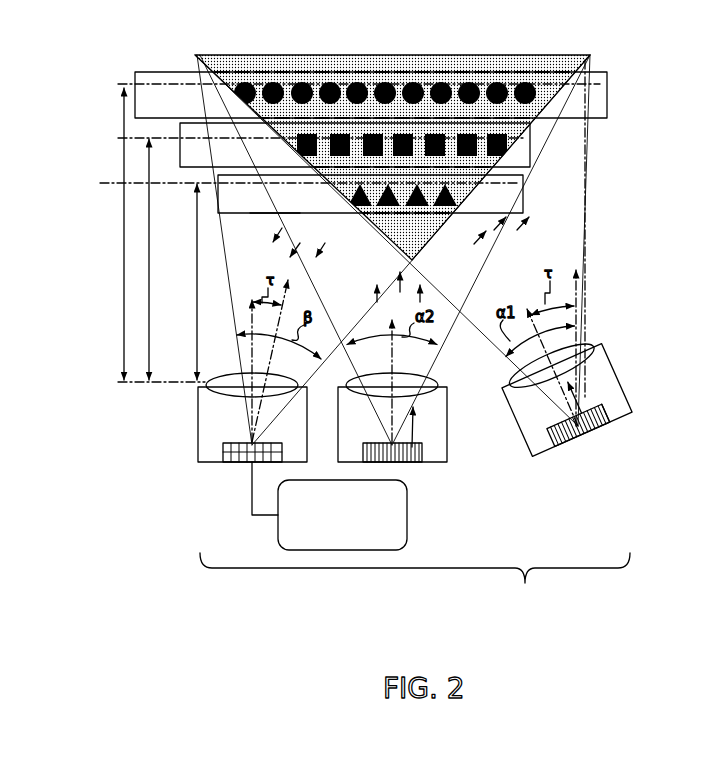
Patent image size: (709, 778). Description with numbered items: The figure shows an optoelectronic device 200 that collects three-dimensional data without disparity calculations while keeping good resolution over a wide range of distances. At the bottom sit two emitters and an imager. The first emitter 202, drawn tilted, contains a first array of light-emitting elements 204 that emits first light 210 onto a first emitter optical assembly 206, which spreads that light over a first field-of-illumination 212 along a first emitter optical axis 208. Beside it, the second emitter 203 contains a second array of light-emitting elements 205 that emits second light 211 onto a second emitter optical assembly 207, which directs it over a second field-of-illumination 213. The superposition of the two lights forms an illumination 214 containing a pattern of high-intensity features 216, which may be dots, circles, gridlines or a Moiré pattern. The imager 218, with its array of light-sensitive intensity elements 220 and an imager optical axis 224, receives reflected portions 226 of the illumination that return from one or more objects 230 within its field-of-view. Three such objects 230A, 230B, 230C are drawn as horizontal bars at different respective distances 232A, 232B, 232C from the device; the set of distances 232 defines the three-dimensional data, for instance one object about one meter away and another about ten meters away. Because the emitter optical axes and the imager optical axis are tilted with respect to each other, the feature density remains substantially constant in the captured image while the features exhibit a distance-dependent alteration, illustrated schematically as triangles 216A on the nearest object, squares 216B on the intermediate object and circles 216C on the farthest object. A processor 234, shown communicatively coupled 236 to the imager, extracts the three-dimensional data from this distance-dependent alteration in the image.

The optoelectronic device 200 is at (415, 584).
The first emitter 202 is at (567, 400).
The second emitter 203 is at (392, 424).
The first array of light-emitting elements 204 is at (610, 442).
The second array of light-emitting elements 205 is at (424, 453).
The first emitter optical assembly 206 is at (594, 347).
The second emitter optical assembly 207 is at (432, 382).
The first emitter optical axis 208 is at (578, 392).
The first light 210 is at (610, 402).
The second light 211 is at (420, 430).
The first field-of-illumination 212 is at (587, 252).
The second field-of-illumination 213 is at (286, 213).
The illumination 214 is at (450, 48).
The high-intensity features 216 is at (527, 193).
The triangles 216A is at (462, 185).
The squares 216B is at (509, 140).
The circles 216C is at (554, 93).
The imager 218 is at (252, 417).
The array of light-sensitive intensity elements 220 is at (222, 450).
The imager optical axis 224 is at (292, 300).
The reflected portions 226 is at (299, 241).
The objects 230 is at (216, 192).
The object 230A is at (370, 194).
The object 230B is at (355, 145).
The object 230C is at (371, 95).
The distances 232 is at (139, 259).
The first distance 232A is at (196, 333).
The second distance 232B is at (152, 280).
The third distance 232C is at (124, 226).
The processor 234 is at (342, 515).
The communicative coupling 236 is at (250, 505).